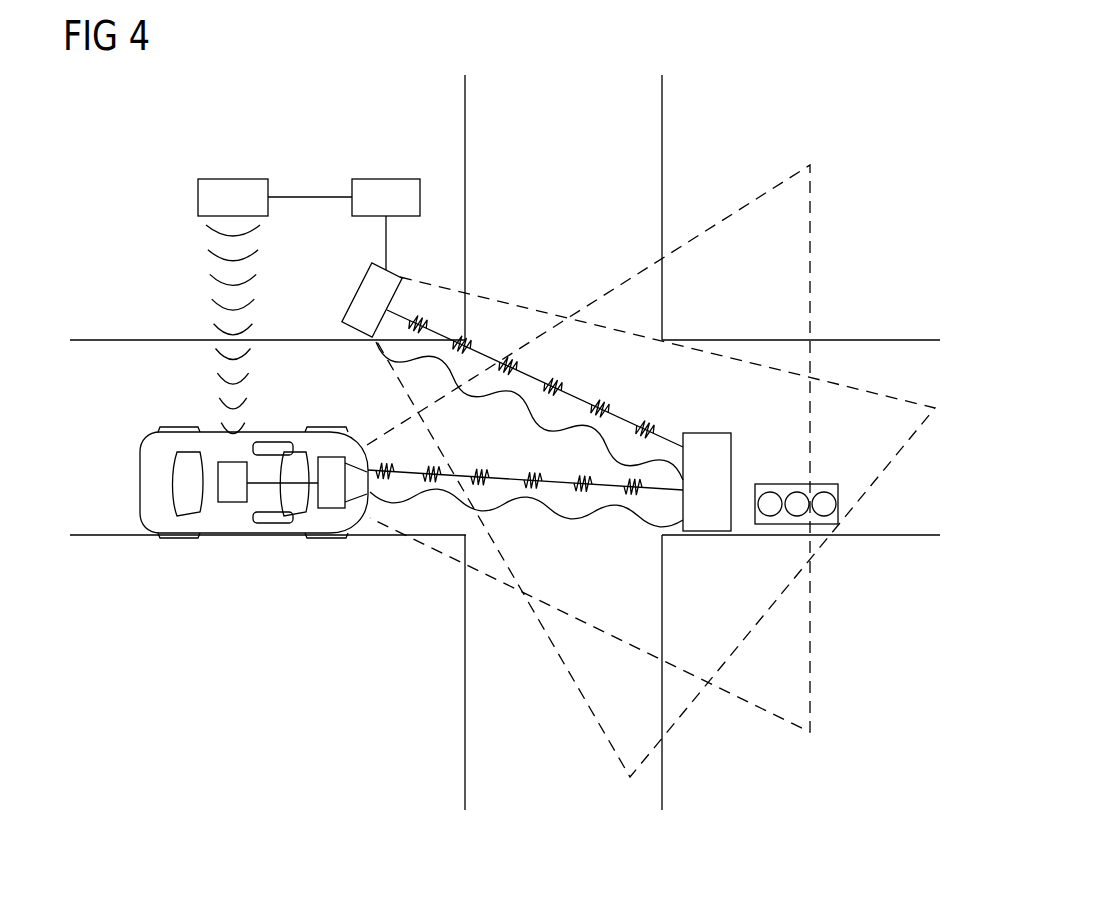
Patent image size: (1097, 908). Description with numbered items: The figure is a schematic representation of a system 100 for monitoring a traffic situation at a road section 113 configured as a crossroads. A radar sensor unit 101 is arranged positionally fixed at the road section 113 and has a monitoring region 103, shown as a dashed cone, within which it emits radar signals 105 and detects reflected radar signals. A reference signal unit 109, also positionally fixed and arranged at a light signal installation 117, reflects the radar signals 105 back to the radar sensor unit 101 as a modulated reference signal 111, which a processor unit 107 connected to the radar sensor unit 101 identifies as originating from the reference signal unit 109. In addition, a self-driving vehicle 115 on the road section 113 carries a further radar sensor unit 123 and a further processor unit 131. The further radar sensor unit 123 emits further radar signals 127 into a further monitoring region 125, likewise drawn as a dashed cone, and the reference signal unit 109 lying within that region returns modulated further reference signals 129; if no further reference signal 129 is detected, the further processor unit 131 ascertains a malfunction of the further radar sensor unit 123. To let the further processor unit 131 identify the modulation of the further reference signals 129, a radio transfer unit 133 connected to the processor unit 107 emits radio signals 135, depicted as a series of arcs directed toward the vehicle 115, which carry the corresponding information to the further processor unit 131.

The system 100 is at (841, 95).
The radar sensor unit 101 is at (354, 301).
The monitoring region 103 is at (513, 303).
The radar signals 105 is at (493, 382).
The processor unit 107 is at (388, 179).
The reference signal unit 109 is at (708, 433).
The reference signal 111 is at (585, 402).
The road section 113 is at (665, 140).
The self-driving vehicle 115 is at (140, 483).
The light signal installation 117 is at (826, 484).
The further radar sensor unit 123 is at (350, 443).
The further monitoring region 125 is at (640, 651).
The further radar signals 127 is at (620, 520).
The further reference signals 129 is at (508, 472).
The further processor unit 131 is at (232, 503).
The radio transfer unit 133 is at (233, 179).
The radio signals 135 is at (208, 233).